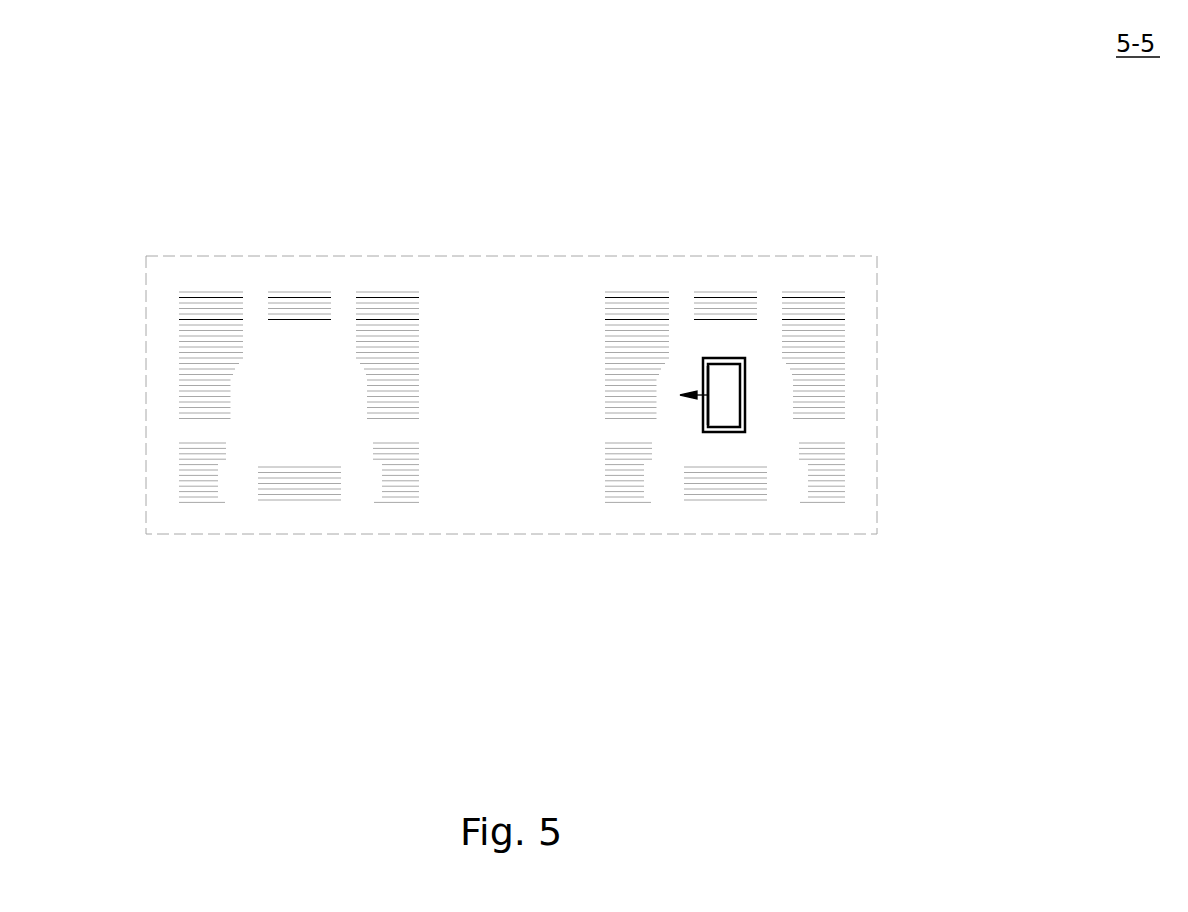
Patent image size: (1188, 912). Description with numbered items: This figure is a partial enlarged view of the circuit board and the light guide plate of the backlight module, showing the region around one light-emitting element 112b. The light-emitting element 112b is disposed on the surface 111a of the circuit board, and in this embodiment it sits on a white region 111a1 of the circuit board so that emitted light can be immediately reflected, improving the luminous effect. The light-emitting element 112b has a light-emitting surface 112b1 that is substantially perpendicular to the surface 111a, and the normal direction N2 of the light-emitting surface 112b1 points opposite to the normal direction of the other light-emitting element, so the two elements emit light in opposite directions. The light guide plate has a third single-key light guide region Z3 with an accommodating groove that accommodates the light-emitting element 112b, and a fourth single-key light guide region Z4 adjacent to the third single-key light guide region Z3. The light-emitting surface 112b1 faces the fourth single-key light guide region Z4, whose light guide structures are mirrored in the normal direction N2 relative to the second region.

The fourth single-key light guide region Z4 is at (209, 266).
The third single-key light guide region Z3 is at (814, 264).
The surface of the circuit board 111a is at (503, 267).
The white region 111a1 is at (726, 358).
The light-emitting element 112b is at (730, 420).
The light-emitting surface 112b1 is at (708, 420).
The normal direction N2 is at (700, 393).